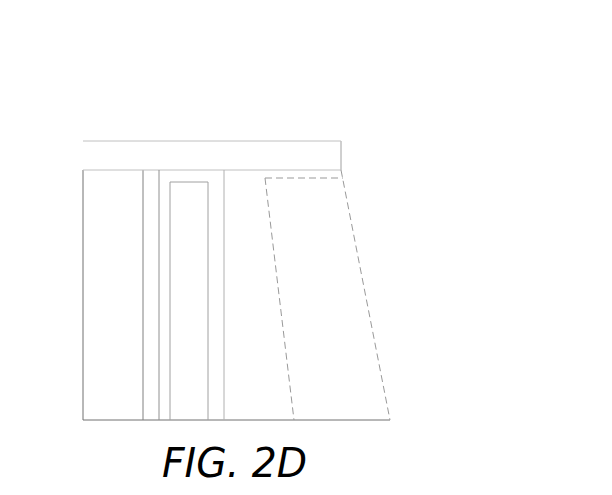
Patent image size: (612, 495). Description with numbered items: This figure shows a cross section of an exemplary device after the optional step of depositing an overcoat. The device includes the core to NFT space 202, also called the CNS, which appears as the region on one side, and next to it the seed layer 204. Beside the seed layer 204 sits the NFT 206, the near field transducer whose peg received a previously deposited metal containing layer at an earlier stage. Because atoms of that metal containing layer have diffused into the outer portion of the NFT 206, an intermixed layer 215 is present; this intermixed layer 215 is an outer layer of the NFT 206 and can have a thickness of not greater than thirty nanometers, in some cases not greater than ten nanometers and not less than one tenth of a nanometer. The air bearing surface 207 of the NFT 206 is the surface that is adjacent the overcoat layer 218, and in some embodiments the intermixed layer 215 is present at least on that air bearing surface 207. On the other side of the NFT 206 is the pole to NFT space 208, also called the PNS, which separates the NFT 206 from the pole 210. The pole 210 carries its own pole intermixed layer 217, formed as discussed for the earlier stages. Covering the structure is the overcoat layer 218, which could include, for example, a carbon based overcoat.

The core to NFT space 202 is at (129, 220).
The seed layer 204 is at (141, 184).
The NFT 206 is at (184, 215).
The air bearing surface 207 is at (189, 181).
The pole to NFT space 208 is at (274, 368).
The pole 210 is at (317, 268).
The intermixed layer 215 is at (212, 177).
The pole intermixed layer 217 is at (303, 178).
The overcoat layer 218 is at (332, 161).